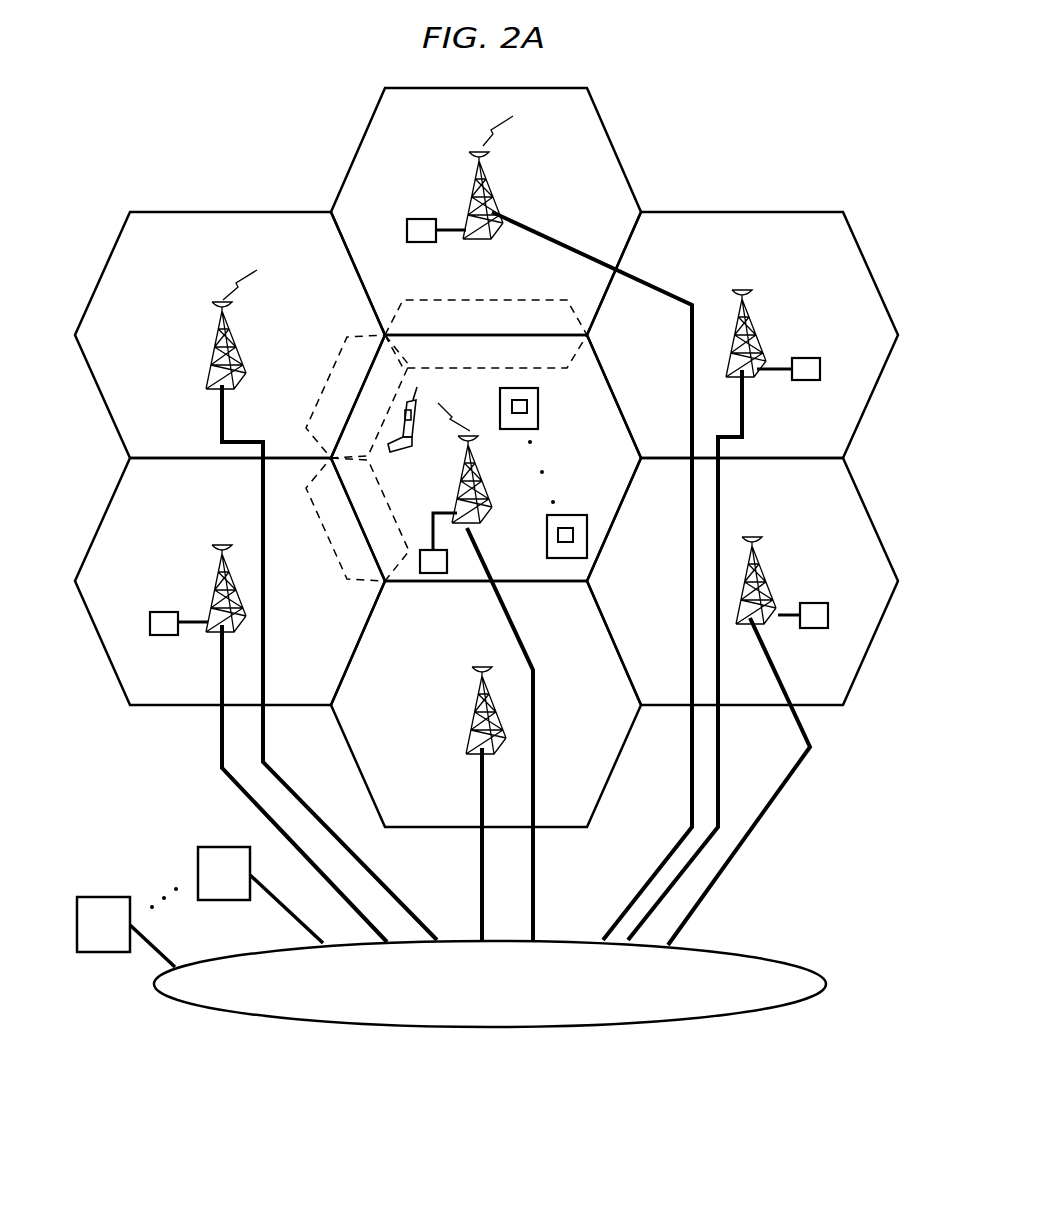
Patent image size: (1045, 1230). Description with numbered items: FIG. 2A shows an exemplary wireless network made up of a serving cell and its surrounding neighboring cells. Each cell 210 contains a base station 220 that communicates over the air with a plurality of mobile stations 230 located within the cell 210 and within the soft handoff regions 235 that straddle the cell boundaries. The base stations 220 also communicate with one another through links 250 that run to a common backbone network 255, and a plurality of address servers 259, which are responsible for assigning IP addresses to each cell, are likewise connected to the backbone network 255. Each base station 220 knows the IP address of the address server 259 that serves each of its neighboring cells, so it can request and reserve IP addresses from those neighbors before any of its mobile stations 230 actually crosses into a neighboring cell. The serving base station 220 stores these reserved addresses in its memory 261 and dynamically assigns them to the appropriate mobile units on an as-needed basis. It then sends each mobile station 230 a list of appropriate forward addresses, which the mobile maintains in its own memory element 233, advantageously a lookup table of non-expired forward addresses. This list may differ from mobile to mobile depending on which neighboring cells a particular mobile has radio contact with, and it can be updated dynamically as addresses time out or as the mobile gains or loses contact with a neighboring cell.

The cell 210 is at (878, 464).
The base station 220 is at (470, 726).
The mobile station 230 is at (542, 421).
The memory element 233 is at (625, 548).
The soft handoff region 235 is at (538, 300).
The link 250 is at (222, 756).
The backbone network 255 is at (403, 1028).
The address server 259 is at (214, 847).
The memory 261 is at (407, 228).